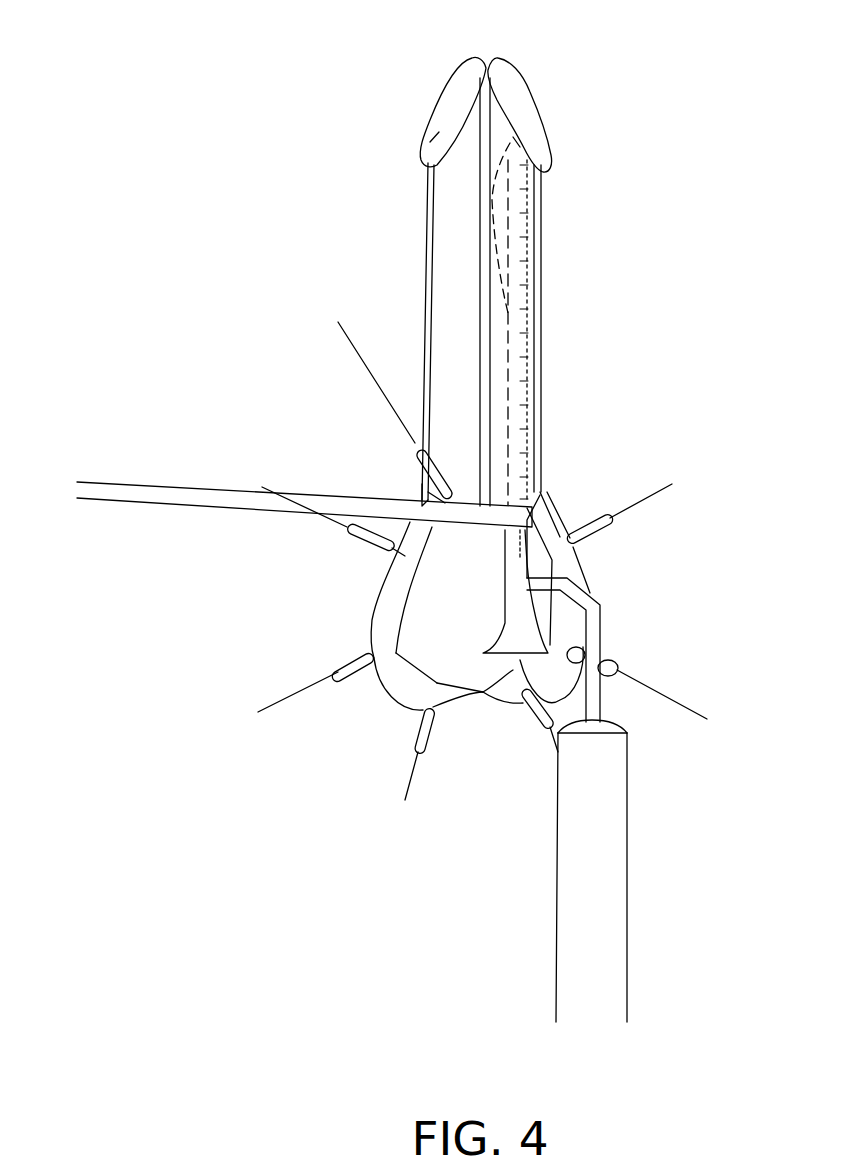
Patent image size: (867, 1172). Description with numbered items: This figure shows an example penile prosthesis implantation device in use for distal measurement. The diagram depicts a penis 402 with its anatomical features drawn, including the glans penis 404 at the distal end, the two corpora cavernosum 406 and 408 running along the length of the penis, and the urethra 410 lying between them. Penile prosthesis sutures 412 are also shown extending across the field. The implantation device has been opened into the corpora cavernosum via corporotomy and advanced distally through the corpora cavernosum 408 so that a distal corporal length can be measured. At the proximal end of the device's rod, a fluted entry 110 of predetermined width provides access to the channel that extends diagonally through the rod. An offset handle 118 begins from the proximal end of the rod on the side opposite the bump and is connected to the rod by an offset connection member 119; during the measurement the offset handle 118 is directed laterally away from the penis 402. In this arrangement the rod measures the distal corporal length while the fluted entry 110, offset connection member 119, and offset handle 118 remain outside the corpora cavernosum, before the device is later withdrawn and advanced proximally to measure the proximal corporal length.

The penis 402 is at (392, 105).
The glans penis 404 is at (553, 92).
The corpora cavernosum 406 is at (450, 238).
The corpora cavernosum 408 is at (505, 140).
The urethra 410 is at (473, 305).
The penile prosthesis sutures 412 is at (163, 519).
The fluted entry 110 is at (492, 626).
The offset connection member 119 is at (612, 598).
The offset handle 118 is at (635, 912).